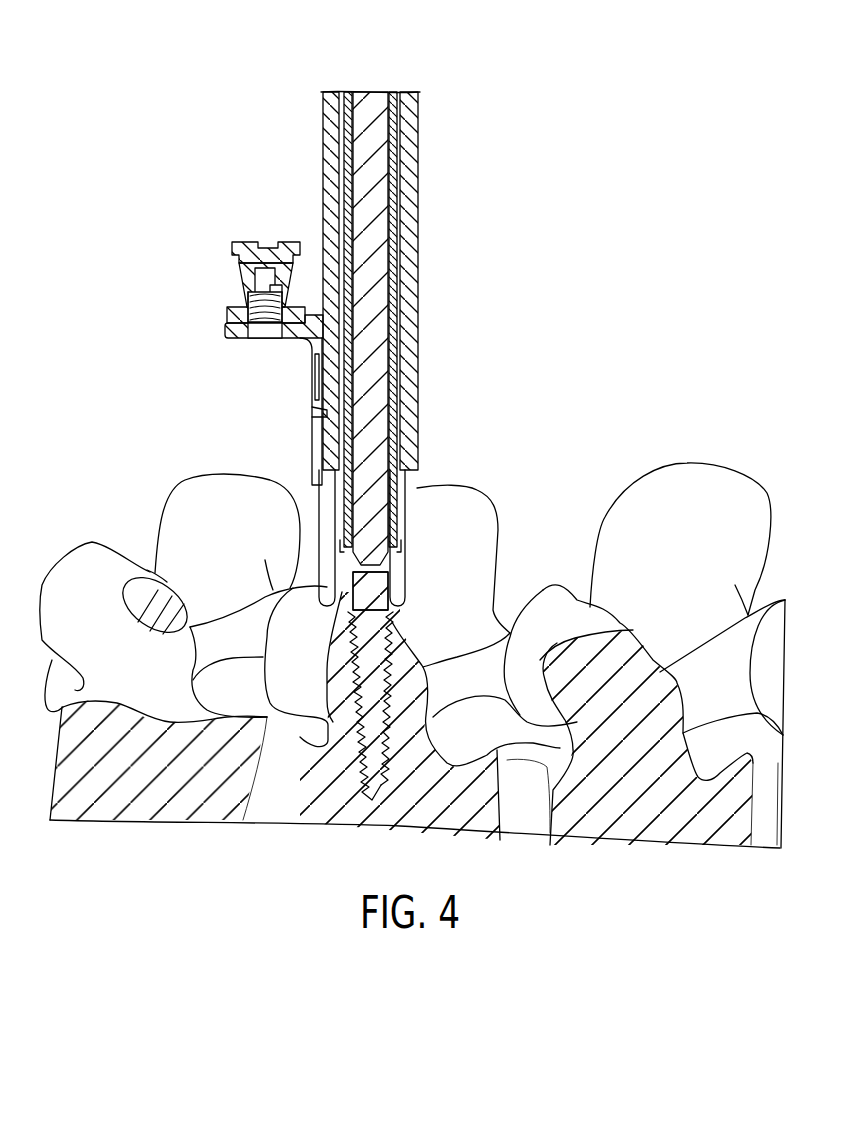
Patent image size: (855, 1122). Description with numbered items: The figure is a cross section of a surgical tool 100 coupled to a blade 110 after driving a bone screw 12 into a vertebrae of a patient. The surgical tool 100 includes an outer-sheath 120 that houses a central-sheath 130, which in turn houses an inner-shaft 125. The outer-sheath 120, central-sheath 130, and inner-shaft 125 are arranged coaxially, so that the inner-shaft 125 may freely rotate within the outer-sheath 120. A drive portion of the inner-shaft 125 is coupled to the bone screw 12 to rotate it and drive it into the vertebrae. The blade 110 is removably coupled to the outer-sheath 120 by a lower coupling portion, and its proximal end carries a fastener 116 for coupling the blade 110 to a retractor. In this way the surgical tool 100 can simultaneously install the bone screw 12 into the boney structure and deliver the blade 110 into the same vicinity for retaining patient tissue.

The surgical tool 100 is at (592, 107).
The bone screw 12 is at (398, 647).
The blade 110 is at (323, 412).
The fastener 116 is at (230, 268).
The outer-sheath 120 is at (410, 443).
The inner-shaft 125 is at (377, 415).
The central-sheath 130 is at (400, 338).